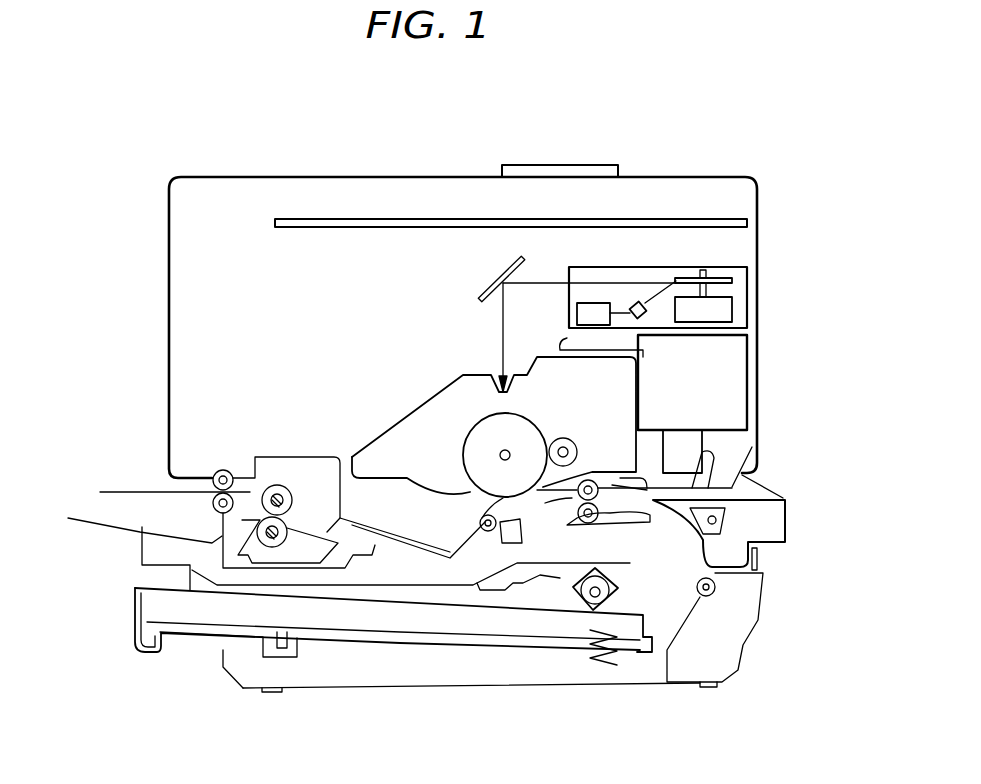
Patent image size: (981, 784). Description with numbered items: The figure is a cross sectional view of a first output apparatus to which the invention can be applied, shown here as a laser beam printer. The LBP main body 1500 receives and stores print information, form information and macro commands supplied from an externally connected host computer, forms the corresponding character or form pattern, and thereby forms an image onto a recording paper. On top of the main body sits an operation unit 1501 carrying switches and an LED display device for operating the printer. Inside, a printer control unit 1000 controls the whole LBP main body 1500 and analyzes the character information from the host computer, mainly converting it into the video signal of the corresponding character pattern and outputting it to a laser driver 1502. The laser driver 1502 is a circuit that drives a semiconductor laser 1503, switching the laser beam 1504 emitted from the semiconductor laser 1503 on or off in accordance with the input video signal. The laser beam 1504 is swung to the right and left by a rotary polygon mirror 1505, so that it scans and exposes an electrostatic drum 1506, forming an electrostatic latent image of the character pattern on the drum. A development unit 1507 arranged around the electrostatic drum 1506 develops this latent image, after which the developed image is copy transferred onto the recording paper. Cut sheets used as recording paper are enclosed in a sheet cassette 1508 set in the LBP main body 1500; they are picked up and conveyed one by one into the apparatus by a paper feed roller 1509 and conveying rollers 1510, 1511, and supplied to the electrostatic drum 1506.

The printer control unit 1000 is at (747, 216).
The LBP main body 1500 is at (710, 176).
The operation unit 1501 is at (585, 165).
The laser driver 1502 is at (577, 312).
The semiconductor laser 1503 is at (643, 316).
The laser beam 1504 is at (620, 283).
The rotary polygon mirror 1505 is at (747, 283).
The electrostatic drum 1506 is at (470, 428).
The development unit 1507 is at (387, 443).
The sheet cassette 1508 is at (133, 625).
The paper feed roller 1509 is at (570, 600).
The conveying roller 1510 is at (700, 597).
The conveying roller 1511 is at (577, 528).